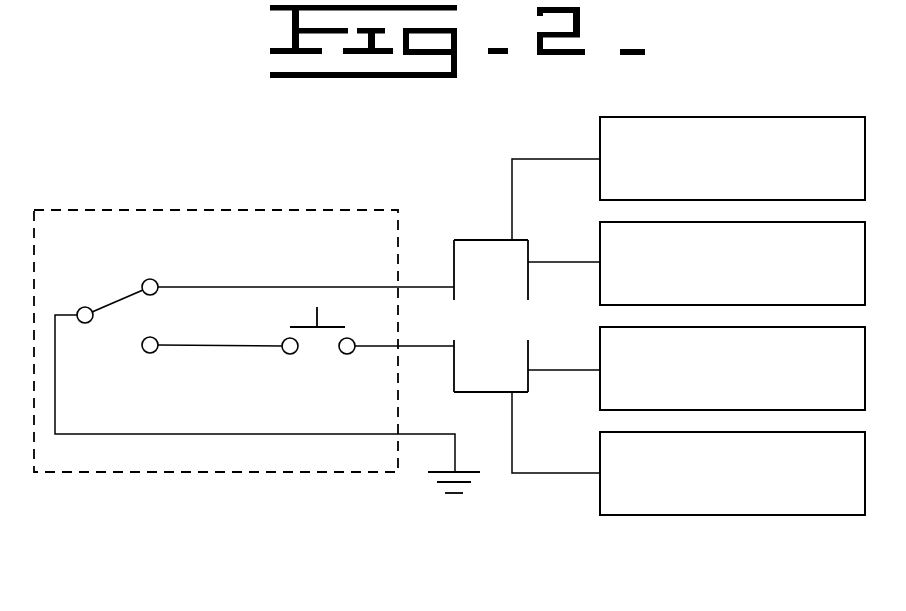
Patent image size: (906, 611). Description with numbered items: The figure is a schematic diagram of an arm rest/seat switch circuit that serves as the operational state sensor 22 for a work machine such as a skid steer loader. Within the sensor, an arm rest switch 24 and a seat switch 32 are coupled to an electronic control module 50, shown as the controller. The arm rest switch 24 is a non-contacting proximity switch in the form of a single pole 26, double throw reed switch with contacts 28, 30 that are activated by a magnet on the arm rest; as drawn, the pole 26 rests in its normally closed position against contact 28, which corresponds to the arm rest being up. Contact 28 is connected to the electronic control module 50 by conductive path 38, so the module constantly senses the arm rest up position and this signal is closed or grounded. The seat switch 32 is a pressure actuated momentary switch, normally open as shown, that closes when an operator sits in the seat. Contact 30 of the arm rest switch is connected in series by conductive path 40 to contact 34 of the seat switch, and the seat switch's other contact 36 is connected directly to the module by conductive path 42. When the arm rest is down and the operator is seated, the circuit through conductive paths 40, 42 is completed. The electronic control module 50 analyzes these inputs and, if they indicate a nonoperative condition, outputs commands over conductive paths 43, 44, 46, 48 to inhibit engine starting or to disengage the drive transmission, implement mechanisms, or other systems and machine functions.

The operational state sensor 22 is at (166, 532).
The arm rest switch 24 is at (96, 303).
The pole 26 is at (86, 323).
The contact 28 is at (158, 282).
The contact 30 is at (146, 353).
The seat switch 32 is at (297, 312).
The contact 34 is at (282, 340).
The contact 36 is at (353, 352).
The conductive path 38 is at (344, 287).
The conductive path 40 is at (157, 350).
The conductive path 42 is at (417, 347).
The conductive path 43 is at (548, 158).
The conductive path 44 is at (560, 262).
The conductive path 46 is at (572, 371).
The conductive path 48 is at (553, 473).
The electronic control module 50 is at (491, 240).